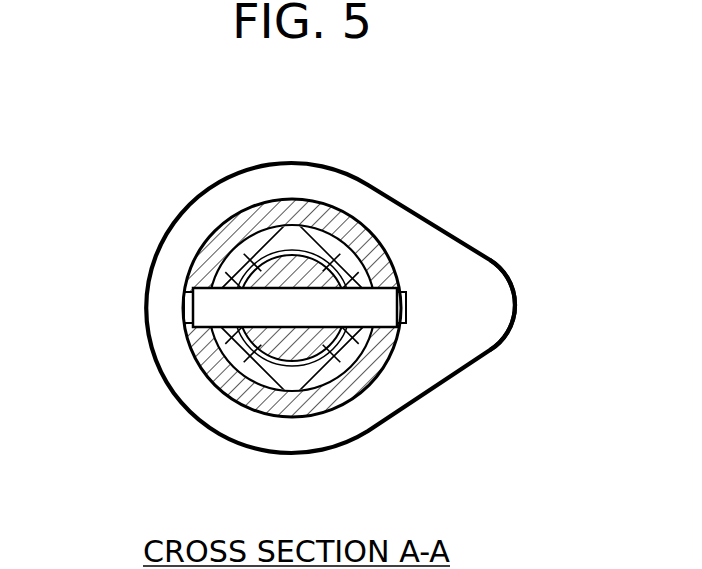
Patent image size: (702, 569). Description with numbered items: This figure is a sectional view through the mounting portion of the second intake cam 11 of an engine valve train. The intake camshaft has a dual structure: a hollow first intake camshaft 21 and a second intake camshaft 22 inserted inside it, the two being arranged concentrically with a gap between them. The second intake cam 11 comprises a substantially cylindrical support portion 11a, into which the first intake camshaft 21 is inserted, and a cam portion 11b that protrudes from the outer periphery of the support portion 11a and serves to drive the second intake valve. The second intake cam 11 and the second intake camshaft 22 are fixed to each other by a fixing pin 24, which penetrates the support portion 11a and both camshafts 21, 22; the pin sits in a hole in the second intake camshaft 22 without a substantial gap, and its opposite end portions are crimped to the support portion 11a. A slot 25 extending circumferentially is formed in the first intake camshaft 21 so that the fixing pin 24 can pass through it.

The second intake cam 11 is at (404, 202).
The support portion 11a is at (261, 212).
The cam portion 11b is at (483, 285).
The first intake camshaft 21 is at (331, 243).
The second intake camshaft 22 is at (307, 340).
The fixing pin 24 is at (228, 309).
The slot 25 is at (292, 308).